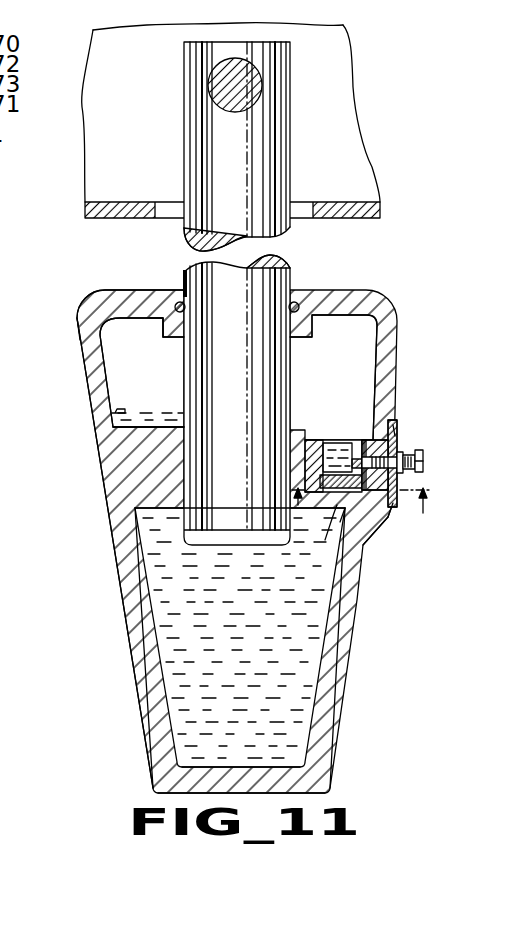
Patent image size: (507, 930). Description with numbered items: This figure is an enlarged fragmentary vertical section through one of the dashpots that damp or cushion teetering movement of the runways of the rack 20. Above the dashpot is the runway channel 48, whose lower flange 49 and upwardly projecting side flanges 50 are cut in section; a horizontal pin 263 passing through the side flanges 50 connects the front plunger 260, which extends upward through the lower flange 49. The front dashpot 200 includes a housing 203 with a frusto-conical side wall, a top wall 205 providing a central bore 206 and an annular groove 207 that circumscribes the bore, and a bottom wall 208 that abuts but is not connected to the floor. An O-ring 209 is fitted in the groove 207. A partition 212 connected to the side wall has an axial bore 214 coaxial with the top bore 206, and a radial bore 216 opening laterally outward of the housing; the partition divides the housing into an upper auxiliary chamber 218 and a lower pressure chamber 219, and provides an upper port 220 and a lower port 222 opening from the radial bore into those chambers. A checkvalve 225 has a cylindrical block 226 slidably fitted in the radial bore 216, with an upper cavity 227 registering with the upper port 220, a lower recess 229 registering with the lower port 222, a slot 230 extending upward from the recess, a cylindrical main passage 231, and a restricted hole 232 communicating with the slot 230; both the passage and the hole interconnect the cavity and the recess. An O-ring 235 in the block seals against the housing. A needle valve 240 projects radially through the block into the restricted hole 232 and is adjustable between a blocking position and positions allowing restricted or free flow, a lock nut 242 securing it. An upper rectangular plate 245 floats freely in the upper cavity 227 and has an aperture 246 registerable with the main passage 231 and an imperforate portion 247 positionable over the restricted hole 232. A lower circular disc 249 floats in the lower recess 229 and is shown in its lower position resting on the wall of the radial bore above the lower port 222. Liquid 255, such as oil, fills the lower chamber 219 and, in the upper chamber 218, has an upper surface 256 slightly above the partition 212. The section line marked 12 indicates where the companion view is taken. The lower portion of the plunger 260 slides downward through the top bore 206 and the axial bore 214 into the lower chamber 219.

The rack 20 is at (137, 628).
The channel 48 is at (341, 118).
The lower flange 49 is at (123, 207).
The side flanges 50 is at (155, 133).
The front dashpot 200 is at (104, 449).
The housing 203 is at (97, 387).
The top wall 205 is at (132, 302).
The central bore 206 is at (186, 275).
The annular groove 207 is at (294, 304).
The bottom wall 208 is at (175, 773).
The O-ring 209 is at (177, 319).
The partition 212 is at (127, 477).
The axial bore 214 is at (198, 437).
The radial bore 216 is at (311, 440).
The upper auxiliary chamber 218 is at (362, 355).
The lower pressure chamber 219 is at (178, 683).
The upper port 220 is at (358, 424).
The lower port 222 is at (340, 522).
The checkvalve 225 is at (398, 436).
The cylindrical block 226 is at (308, 473).
The upper cavity 227 is at (396, 432).
The lower recess 229 is at (364, 546).
The slot 230 is at (398, 478).
The main passage 231 is at (307, 463).
The restricted hole 232 is at (397, 440).
The O-ring 235 is at (361, 496).
The needle valve 240 is at (423, 462).
The lock nut 242 is at (400, 452).
The upper rectangular plate 245 is at (359, 440).
The aperture 246 is at (305, 455).
The imperforate portion 247 is at (368, 440).
The lower circular disc 249 is at (325, 540).
The liquid 255 is at (158, 568).
The upper surface 256 is at (112, 412).
The front plunger 260 is at (281, 256).
The horizontal pin 263 is at (222, 81).
The section line 12- 12 is at (370, 515).